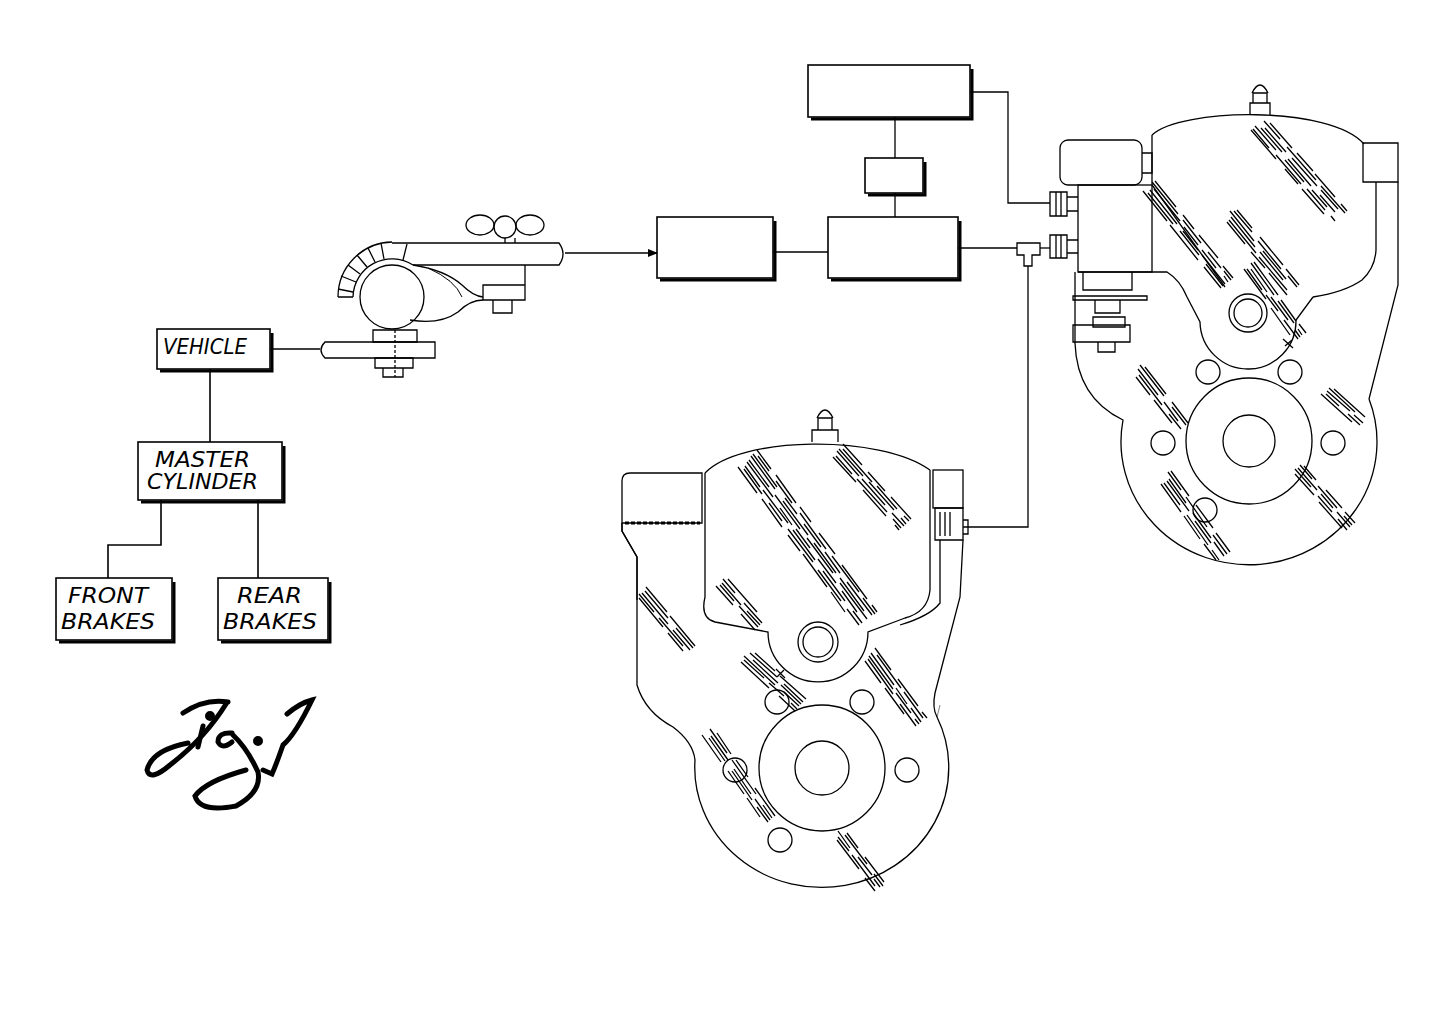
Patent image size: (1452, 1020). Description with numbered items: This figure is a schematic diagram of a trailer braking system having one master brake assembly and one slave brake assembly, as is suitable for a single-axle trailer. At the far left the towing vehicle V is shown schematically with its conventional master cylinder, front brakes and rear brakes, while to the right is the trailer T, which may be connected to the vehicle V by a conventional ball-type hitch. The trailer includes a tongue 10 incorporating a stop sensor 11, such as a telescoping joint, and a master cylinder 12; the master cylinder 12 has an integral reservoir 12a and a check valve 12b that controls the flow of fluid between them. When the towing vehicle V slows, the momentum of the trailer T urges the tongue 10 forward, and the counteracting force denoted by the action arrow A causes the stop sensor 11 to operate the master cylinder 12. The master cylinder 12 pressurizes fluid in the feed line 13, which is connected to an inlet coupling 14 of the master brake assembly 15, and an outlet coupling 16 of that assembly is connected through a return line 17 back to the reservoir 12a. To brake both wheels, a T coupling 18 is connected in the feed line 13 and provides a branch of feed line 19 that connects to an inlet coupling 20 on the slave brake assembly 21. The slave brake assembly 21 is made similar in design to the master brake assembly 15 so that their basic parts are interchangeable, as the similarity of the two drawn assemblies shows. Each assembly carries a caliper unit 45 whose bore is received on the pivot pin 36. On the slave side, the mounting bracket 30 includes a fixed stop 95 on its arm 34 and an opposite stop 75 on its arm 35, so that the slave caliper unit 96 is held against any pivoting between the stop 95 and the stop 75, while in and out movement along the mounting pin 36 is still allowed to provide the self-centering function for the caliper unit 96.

The tongue 10 is at (530, 257).
The stop sensor 11 is at (727, 268).
The master cylinder 12 is at (870, 270).
The reservoir 12a is at (960, 78).
The check valve 12b is at (920, 175).
The feed line 13 is at (985, 248).
The inlet coupling 14 is at (1058, 258).
The master brake assembly 15 is at (1370, 121).
The outlet coupling 16 is at (1055, 190).
The return line 17 is at (1012, 110).
The T coupling 18 is at (1024, 238).
The branch of feed line 19 is at (1030, 443).
The inlet coupling 20 is at (964, 543).
The slave brake assembly 21 is at (968, 688).
The mounting bracket 30 is at (642, 707).
The arm 34 is at (655, 560).
The arm 35 is at (950, 607).
The pivot pin 36 is at (822, 648).
The caliper unit 45 is at (1295, 112).
The stop 75 is at (947, 487).
The fixed stop 95 is at (662, 493).
The slave caliper unit 96 is at (877, 436).
The action arrow A is at (603, 255).
The trailer T is at (608, 146).
The vehicle V is at (246, 262).